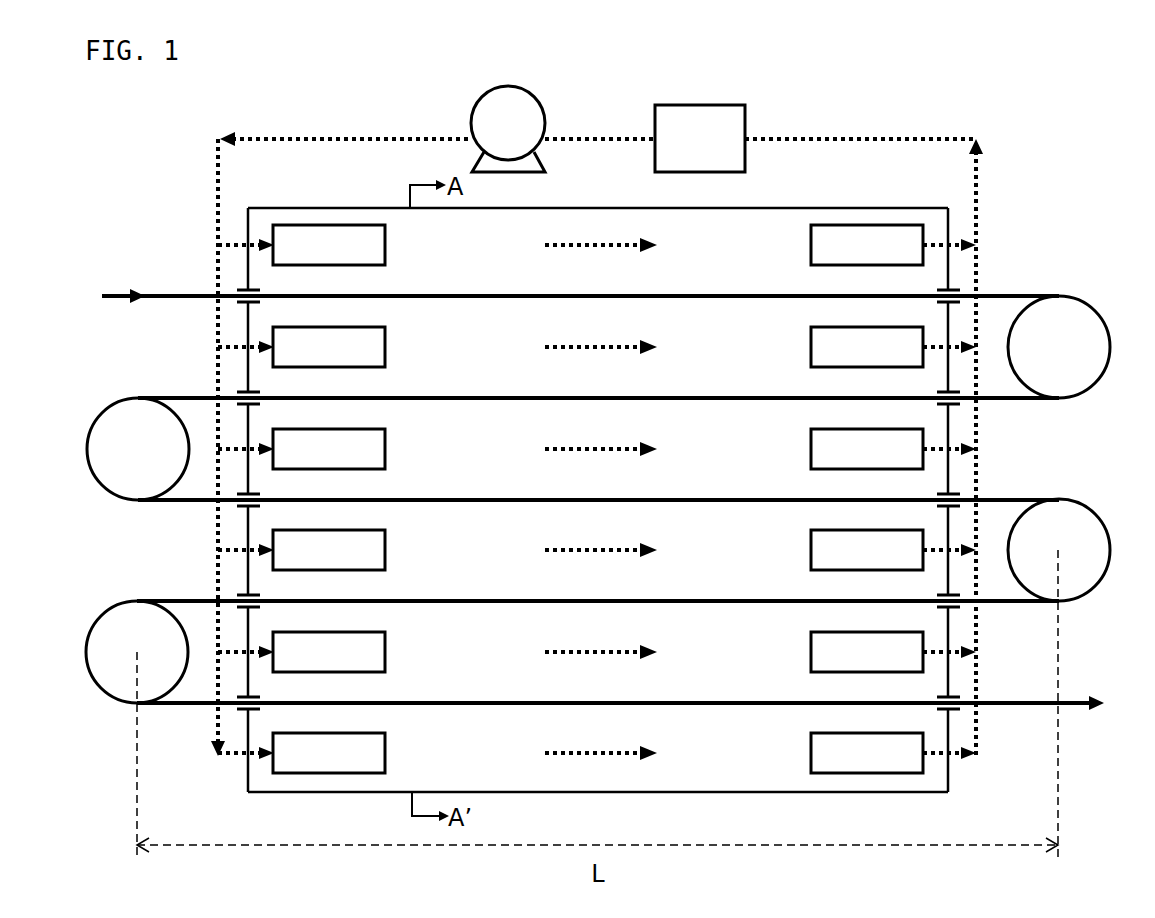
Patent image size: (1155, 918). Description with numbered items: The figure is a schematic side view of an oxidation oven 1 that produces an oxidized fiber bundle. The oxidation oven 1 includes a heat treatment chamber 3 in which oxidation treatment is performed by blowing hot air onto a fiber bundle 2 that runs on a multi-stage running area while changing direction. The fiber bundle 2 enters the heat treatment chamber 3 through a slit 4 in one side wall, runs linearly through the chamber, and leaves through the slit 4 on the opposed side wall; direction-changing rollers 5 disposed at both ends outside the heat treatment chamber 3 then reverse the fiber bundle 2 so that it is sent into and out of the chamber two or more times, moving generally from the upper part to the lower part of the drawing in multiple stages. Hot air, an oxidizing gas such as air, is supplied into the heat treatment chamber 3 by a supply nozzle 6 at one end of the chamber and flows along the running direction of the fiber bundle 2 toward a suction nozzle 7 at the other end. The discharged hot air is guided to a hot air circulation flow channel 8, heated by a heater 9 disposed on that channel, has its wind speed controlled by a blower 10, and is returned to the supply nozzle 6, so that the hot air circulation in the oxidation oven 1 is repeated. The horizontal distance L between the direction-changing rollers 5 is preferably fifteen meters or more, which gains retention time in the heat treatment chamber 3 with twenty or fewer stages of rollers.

The oxidation oven 1 is at (800, 127).
The fiber bundle 2 is at (168, 293).
The heat treatment chamber 3 is at (780, 208).
The slit 4 is at (955, 290).
The direction-changing roller 5 is at (1092, 503).
The supply nozzle 6 is at (320, 225).
The suction nozzle 7 is at (880, 225).
The hot air circulation flow channel 8 is at (350, 139).
The heater 9 is at (655, 125).
The blower 10 is at (472, 128).